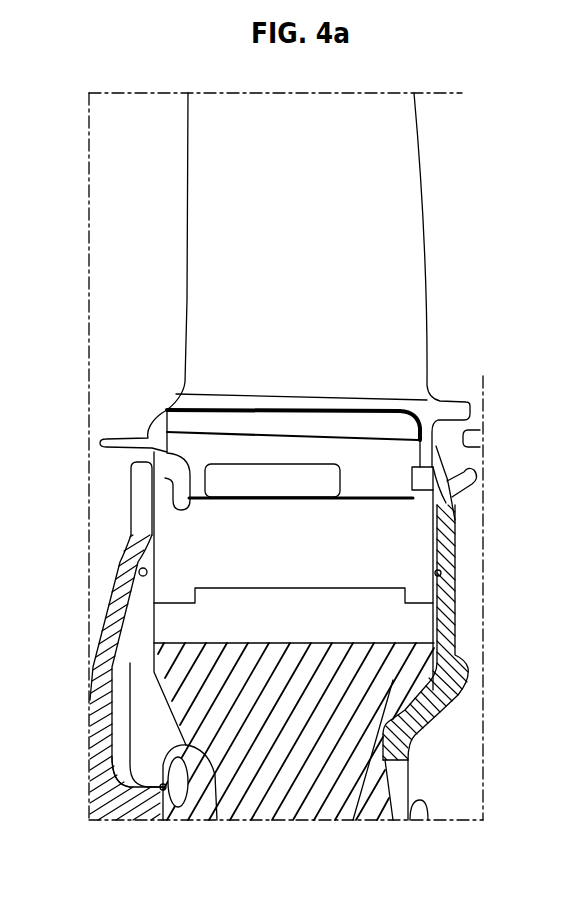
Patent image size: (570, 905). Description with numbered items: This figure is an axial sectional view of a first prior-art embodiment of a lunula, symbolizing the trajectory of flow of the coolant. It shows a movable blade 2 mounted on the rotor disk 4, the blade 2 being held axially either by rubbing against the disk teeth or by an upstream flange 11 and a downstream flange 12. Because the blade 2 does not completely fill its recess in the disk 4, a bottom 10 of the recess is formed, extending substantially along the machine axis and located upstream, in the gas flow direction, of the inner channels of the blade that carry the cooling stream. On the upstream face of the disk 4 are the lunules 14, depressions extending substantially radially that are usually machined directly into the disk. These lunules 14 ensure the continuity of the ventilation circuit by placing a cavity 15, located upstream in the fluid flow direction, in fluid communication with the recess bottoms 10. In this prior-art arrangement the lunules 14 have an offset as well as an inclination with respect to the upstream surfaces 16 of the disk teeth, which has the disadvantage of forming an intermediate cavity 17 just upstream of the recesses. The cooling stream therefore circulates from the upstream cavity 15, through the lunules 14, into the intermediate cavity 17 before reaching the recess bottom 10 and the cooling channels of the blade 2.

The movable blade 2 is at (398, 238).
The disk 4 is at (277, 780).
The bottom of the recess 10 is at (388, 642).
The upstream flange 11 is at (120, 778).
The downstream flange 12 is at (448, 608).
The lunule 14 is at (147, 757).
The cavity 15 is at (212, 797).
The upstream surface of the disk teeth 16 is at (143, 522).
The intermediate cavity 17 is at (146, 665).